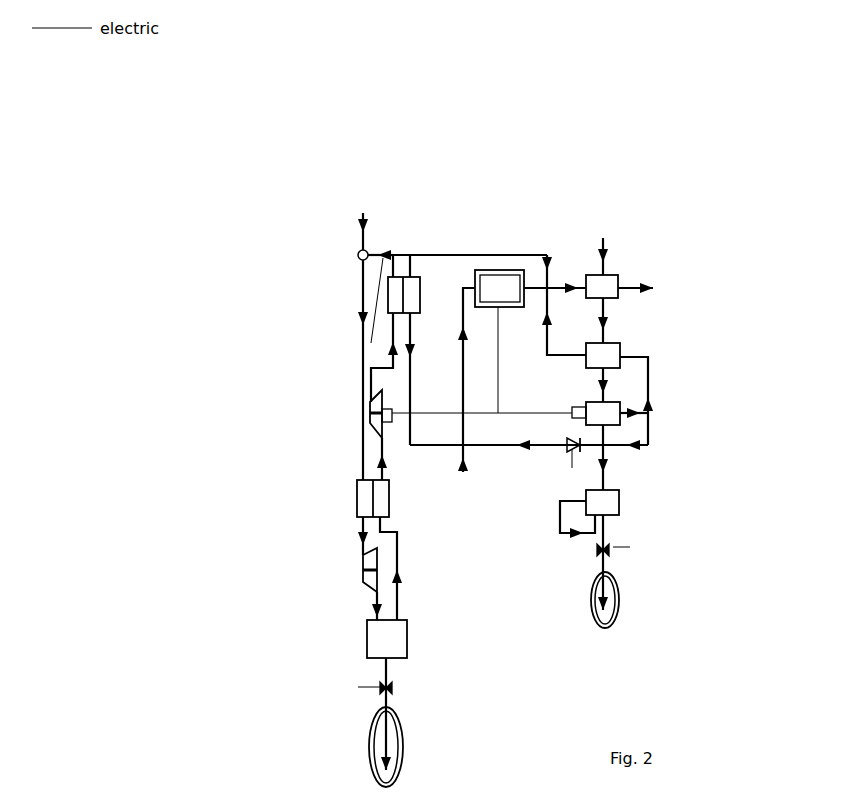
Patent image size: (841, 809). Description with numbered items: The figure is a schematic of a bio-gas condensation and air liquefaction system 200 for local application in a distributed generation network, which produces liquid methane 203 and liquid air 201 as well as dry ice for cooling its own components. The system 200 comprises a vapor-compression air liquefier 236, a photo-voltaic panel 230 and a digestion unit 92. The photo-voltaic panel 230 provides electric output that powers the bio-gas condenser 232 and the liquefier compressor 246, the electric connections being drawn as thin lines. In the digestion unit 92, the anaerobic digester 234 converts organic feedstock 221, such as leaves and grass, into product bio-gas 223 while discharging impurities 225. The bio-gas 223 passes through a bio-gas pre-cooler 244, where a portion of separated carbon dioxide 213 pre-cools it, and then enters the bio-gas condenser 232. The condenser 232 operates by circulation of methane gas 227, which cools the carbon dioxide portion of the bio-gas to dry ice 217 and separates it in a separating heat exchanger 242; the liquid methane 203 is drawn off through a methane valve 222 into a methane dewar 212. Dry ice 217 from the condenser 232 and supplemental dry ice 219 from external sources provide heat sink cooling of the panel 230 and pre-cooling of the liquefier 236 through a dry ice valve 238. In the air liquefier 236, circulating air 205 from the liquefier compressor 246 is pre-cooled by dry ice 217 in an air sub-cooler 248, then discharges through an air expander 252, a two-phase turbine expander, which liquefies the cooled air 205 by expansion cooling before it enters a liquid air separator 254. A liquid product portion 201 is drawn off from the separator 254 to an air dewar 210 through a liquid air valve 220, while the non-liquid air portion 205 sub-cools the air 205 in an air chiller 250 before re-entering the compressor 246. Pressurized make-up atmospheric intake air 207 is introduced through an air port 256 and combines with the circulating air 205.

The bio-gas condensation and air liquefaction system 200 is at (427, 191).
The liquid air 201 is at (382, 760).
The liquid methane 203 is at (595, 595).
The circulating air 205 is at (390, 344).
The make-up atmospheric intake air 207 is at (358, 229).
The liquid air dewar 210 is at (372, 722).
The methane dewar 212 is at (598, 623).
The separated carbon dioxide 213 is at (550, 304).
The dry ice 217 is at (460, 327).
The supplemental dry ice 219 is at (467, 465).
The liquid air valve 220 is at (382, 683).
The organic feedstock 221 is at (608, 253).
The methane valve 222 is at (612, 553).
The product bio-gas 223 is at (608, 322).
The impurities 225 is at (655, 288).
The methane gas 227 is at (575, 537).
The photo-voltaic panel 230 is at (505, 270).
The bio-gas condenser 232 is at (593, 407).
The anaerobic digester 234 is at (613, 280).
The vapor-compression air liquefier 236 is at (391, 604).
The dry ice valve 238 is at (567, 440).
The separating heat exchanger 242 is at (622, 498).
The bio-gas pre-cooler 244 is at (608, 353).
The liquefier compressor 246 is at (370, 405).
The air sub-cooler 248 is at (407, 291).
The air chiller 250 is at (362, 502).
The air expander 252 is at (370, 562).
The liquid air separator 254 is at (375, 635).
The air port 256 is at (357, 253).
The digestion unit 92 is at (588, 387).